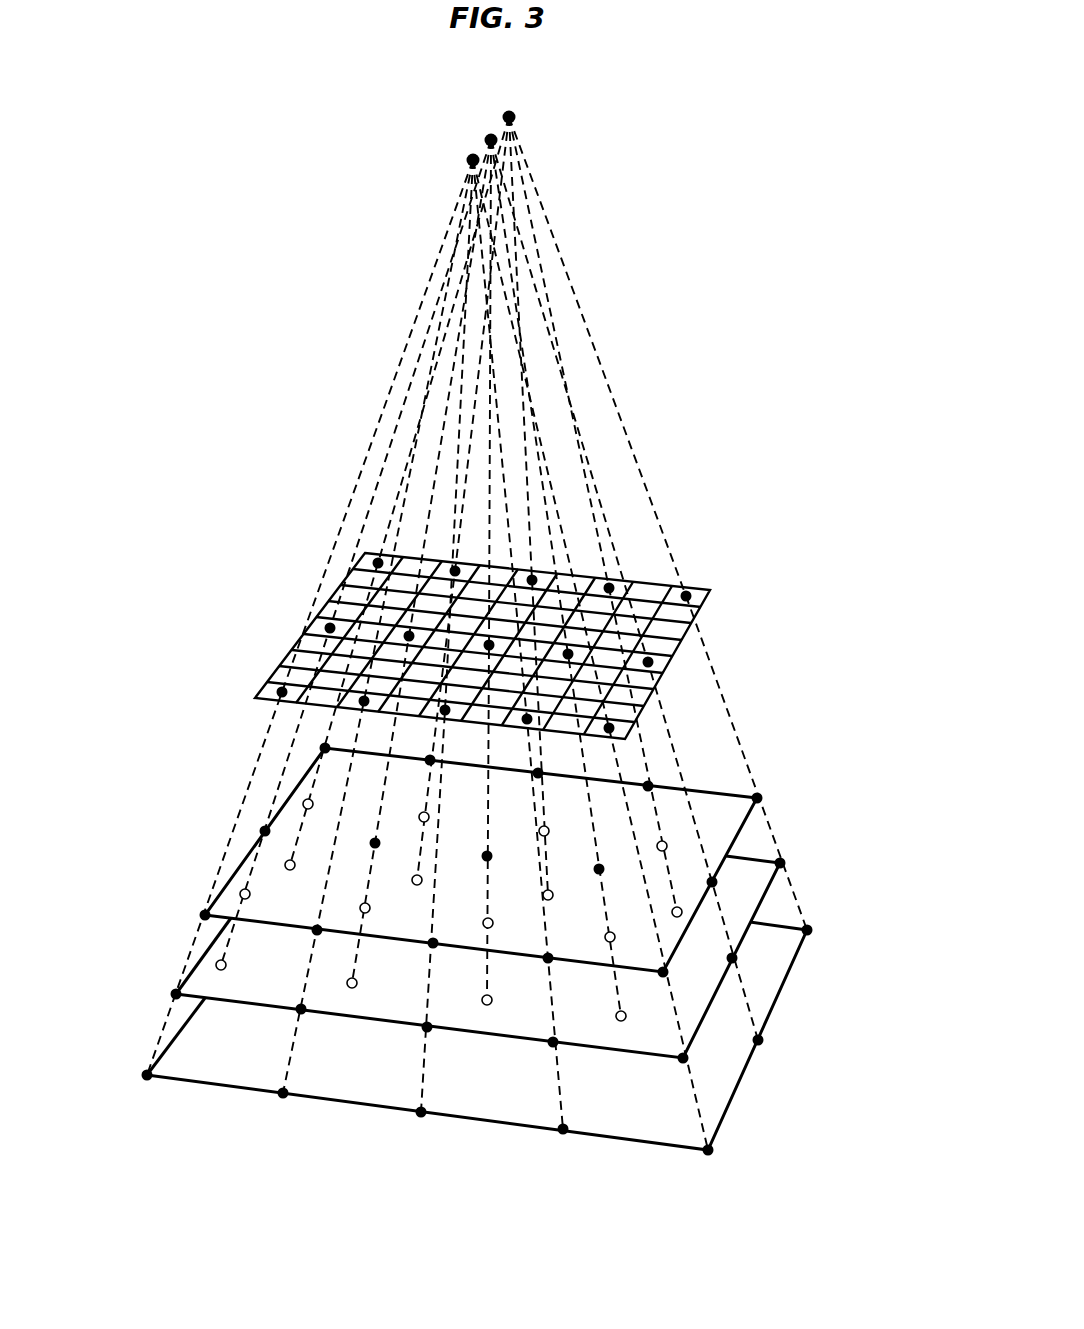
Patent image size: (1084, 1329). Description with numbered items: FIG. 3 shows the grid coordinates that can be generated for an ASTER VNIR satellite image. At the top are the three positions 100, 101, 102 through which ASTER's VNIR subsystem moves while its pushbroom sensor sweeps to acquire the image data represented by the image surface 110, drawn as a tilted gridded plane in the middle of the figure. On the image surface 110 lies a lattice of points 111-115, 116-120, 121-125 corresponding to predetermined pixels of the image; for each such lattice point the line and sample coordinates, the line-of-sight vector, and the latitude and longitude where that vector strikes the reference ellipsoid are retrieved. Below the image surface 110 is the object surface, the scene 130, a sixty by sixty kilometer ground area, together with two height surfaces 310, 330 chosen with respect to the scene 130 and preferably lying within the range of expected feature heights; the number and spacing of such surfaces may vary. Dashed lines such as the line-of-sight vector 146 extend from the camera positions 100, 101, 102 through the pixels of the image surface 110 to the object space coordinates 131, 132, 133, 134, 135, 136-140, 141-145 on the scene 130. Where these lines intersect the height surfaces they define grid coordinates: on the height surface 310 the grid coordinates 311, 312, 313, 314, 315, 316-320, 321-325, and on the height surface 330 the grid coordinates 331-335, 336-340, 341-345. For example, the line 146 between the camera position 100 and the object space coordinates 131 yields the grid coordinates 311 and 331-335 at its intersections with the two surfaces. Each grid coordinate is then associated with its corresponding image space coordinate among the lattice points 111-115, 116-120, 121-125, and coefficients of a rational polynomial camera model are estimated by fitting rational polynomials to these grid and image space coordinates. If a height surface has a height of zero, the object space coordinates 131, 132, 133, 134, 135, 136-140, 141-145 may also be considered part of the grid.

The camera position 100 is at (468, 160).
The camera position 101 is at (486, 139).
The camera position 102 is at (513, 115).
The image surface 110 is at (709, 616).
The lattice points 111-115 is at (247, 684).
The lattice points 116-120 is at (297, 618).
The lattice points 121-125 is at (345, 555).
The scene 130 is at (736, 1097).
The object space coordinates 131 is at (147, 1078).
The object space coordinates 132 is at (283, 1096).
The object space coordinates 133 is at (421, 1115).
The object space coordinates 134 is at (563, 1132).
The object space coordinates 135 is at (708, 1153).
The object space coordinates 136-140 is at (767, 1040).
The object space coordinates 141-145 is at (817, 931).
The line-of-sight vector 146 is at (218, 878).
The height surface 310 is at (756, 940).
The grid coordinates 311 is at (173, 993).
The grid coordinates 312 is at (299, 1011).
The grid coordinates 313 is at (425, 1029).
The grid coordinates 314 is at (551, 1044).
The grid coordinates 315 is at (682, 1061).
The grid coordinates 316-320 is at (749, 959).
The grid coordinates 321-325 is at (791, 863).
The height surface 330 is at (718, 782).
The grid coordinates 331-335 is at (199, 914).
The grid coordinates 336-340 is at (259, 830).
The grid coordinates 341-345 is at (765, 798).